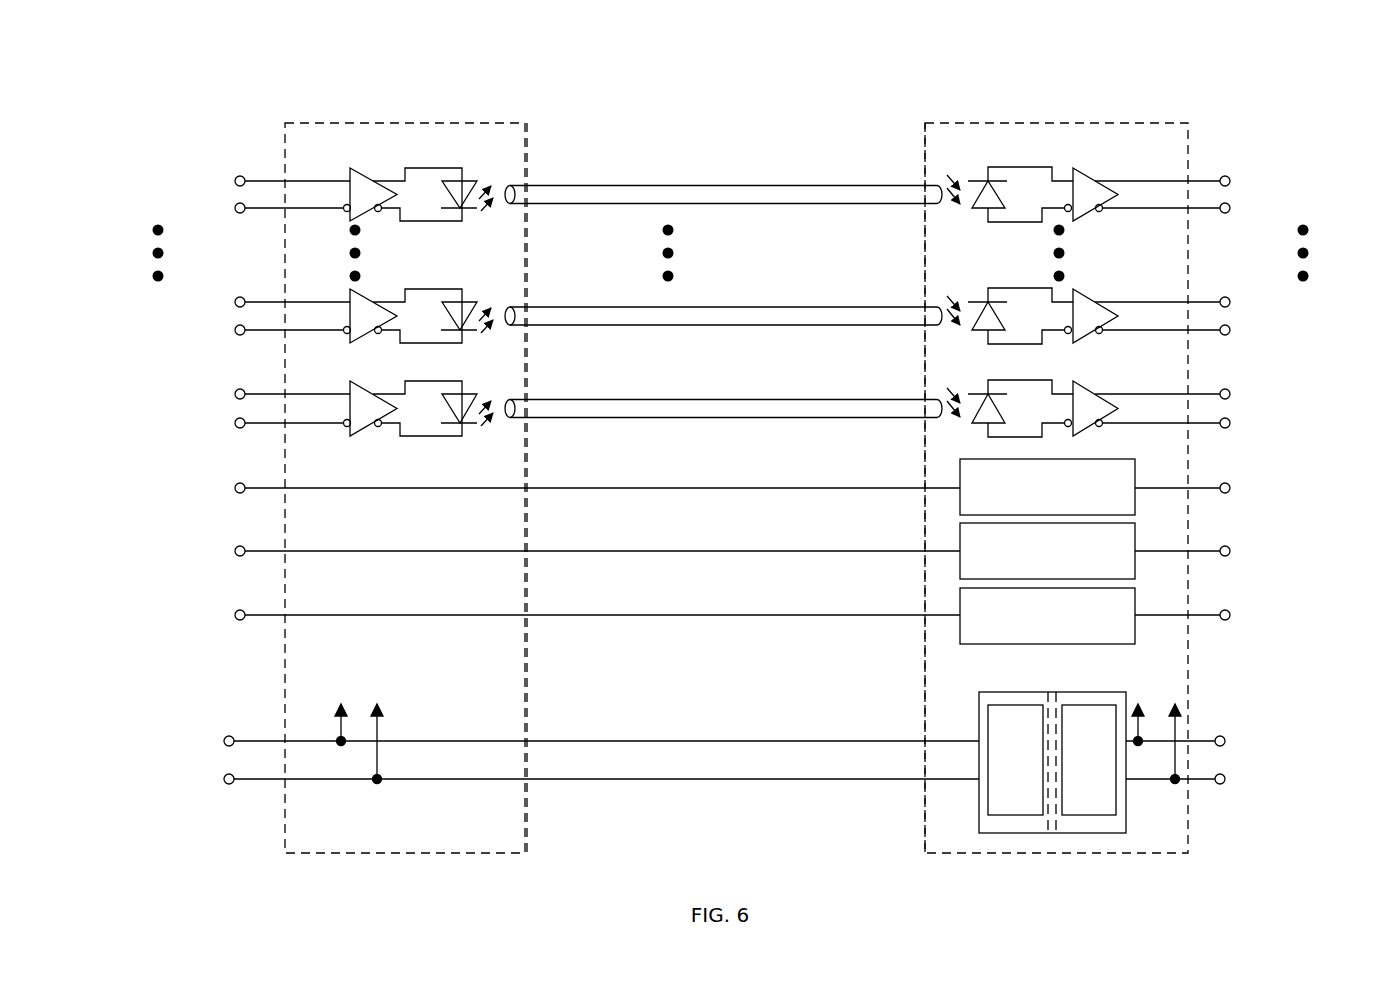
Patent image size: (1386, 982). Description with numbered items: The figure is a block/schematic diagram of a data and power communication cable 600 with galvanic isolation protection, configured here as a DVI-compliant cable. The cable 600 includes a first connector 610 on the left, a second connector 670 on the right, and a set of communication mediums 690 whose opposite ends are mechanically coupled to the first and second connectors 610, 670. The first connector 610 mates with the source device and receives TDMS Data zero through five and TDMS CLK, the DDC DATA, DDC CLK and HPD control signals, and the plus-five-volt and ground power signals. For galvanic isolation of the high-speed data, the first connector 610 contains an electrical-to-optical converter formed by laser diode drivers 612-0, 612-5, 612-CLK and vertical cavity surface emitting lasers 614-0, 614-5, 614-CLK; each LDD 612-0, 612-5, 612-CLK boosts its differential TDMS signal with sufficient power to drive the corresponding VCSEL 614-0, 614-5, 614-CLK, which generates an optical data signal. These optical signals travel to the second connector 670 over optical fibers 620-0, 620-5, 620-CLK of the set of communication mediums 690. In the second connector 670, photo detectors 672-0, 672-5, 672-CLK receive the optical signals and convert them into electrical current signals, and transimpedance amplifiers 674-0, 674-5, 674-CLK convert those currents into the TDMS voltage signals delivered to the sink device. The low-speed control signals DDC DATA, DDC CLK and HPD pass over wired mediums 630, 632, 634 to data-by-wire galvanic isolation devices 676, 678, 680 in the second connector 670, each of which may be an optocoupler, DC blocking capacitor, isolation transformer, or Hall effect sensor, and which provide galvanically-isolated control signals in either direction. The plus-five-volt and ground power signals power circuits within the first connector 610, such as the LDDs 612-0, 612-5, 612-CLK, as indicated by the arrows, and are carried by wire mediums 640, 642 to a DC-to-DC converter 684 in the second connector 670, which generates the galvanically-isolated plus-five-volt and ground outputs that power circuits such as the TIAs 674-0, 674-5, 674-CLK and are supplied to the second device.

The data and power communication cable 600 is at (737, 437).
The first connector 610 is at (527, 105).
The set of communication mediums 690 is at (925, 855).
The second connector 670 is at (1188, 105).
The laser diode driver 612-0 is at (362, 174).
The laser diode driver 612-5 is at (362, 295).
The laser diode driver 612-CLK is at (362, 388).
The vertical cavity surface emitting laser 614-0 is at (484, 183).
The vertical cavity surface emitting laser 614-5 is at (484, 304).
The vertical cavity surface emitting laser 614-CLK is at (484, 397).
The optical fiber 620-0 is at (707, 184).
The optical fiber 620-5 is at (707, 305).
The optical fiber 620-CLK is at (707, 398).
The photo detector 672-0 is at (966, 179).
The photo detector 672-5 is at (966, 300).
The photo detector 672-CLK is at (966, 393).
The transimpedance amplifier 674-0 is at (1074, 169).
The transimpedance amplifier 674-5 is at (1074, 290).
The transimpedance amplifier 674-CLK is at (1074, 383).
The wired medium 630 is at (708, 487).
The wired medium 632 is at (708, 550).
The wired medium 634 is at (708, 614).
The wire medium 640 is at (708, 740).
The wire medium 642 is at (708, 780).
The data-by-wire galvanic isolation device 676 is at (1135, 478).
The data-by-wire galvanic isolation device 678 is at (1135, 542).
The data-by-wire galvanic isolation device 680 is at (1135, 607).
The DC-to-DC converter 684 is at (979, 708).